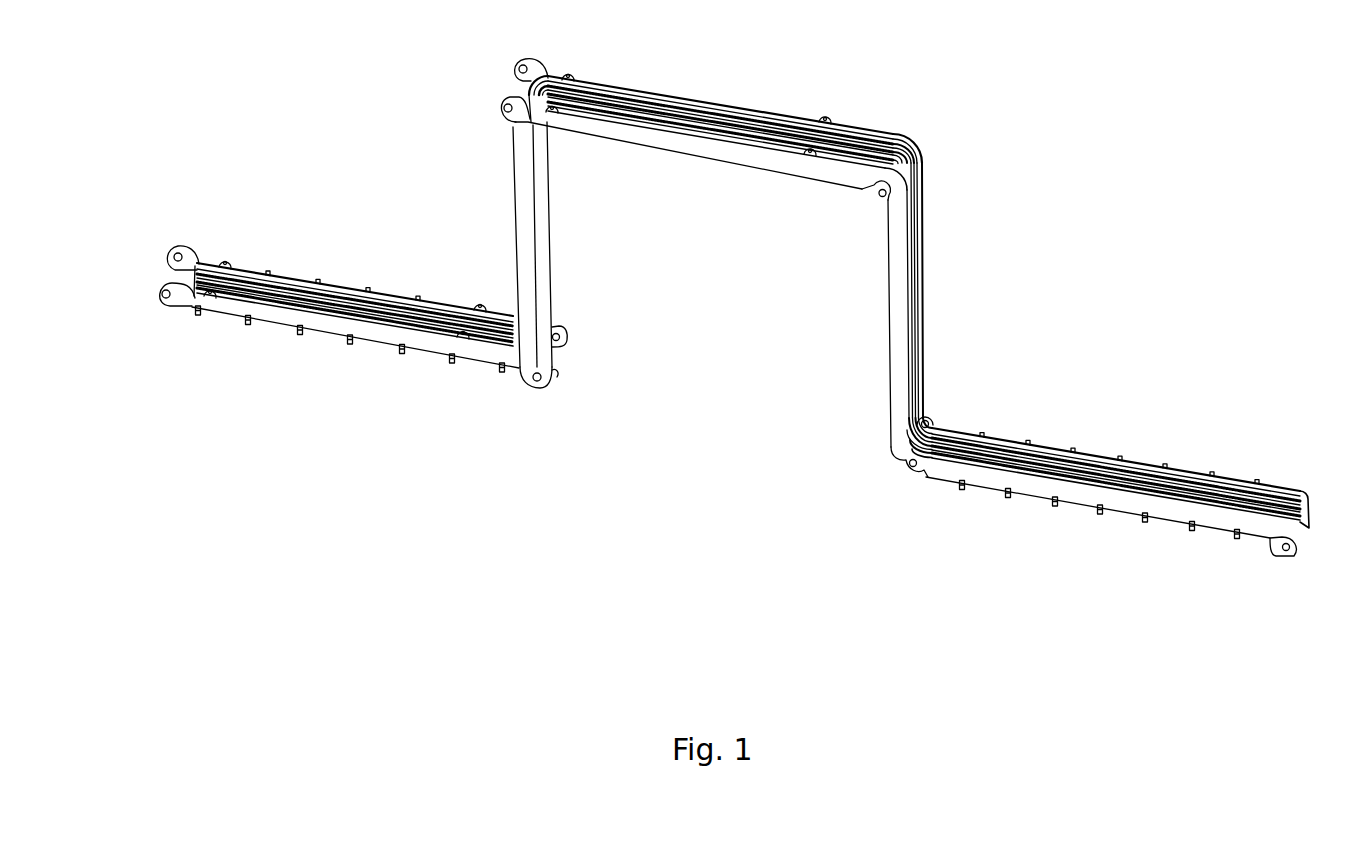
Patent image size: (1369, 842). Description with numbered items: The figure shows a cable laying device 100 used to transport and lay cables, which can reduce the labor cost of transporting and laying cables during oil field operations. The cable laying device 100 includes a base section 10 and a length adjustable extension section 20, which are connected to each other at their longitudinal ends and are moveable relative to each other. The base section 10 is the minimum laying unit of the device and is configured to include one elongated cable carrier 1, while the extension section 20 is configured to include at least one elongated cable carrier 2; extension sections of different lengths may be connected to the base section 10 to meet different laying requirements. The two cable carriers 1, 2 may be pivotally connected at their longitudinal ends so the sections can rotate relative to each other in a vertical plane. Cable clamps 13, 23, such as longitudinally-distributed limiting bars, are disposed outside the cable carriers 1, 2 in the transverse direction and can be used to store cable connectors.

The cable laying device 100 is at (422, 398).
The elongated cable carrier 1 is at (403, 295).
The base section 10 is at (338, 277).
The cable clamp 13 is at (300, 328).
The elongated cable carrier 2 is at (790, 173).
The extension section 20 is at (923, 212).
The cable clamp 23 is at (1007, 492).